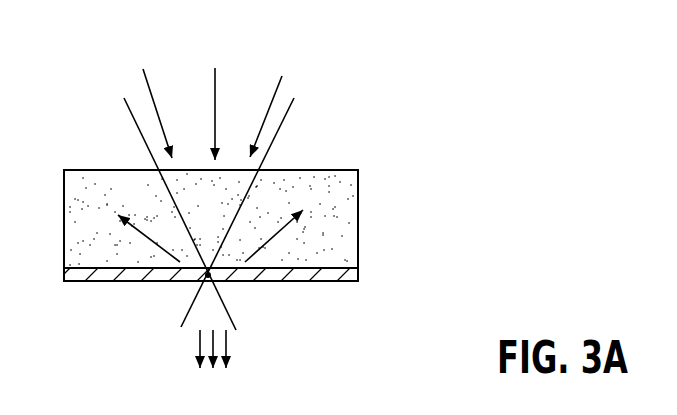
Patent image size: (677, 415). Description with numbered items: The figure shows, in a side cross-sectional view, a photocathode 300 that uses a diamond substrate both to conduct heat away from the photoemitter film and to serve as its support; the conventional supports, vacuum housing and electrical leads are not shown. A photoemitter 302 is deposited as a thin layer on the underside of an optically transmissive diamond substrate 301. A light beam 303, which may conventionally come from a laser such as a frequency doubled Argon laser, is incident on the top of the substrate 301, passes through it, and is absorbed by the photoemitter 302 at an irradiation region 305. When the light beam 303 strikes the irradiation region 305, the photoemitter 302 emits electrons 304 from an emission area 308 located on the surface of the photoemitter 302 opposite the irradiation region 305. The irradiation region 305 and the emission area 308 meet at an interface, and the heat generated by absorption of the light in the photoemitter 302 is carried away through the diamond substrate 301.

The photocathode 300 is at (433, 78).
The optically transmissive diamond substrate 301 is at (358, 198).
The photoemitter 302 is at (358, 277).
The light beam 303 is at (285, 57).
The electrons 304 is at (238, 368).
The irradiation region 305 is at (208, 275).
The emission area 308 is at (208, 277).